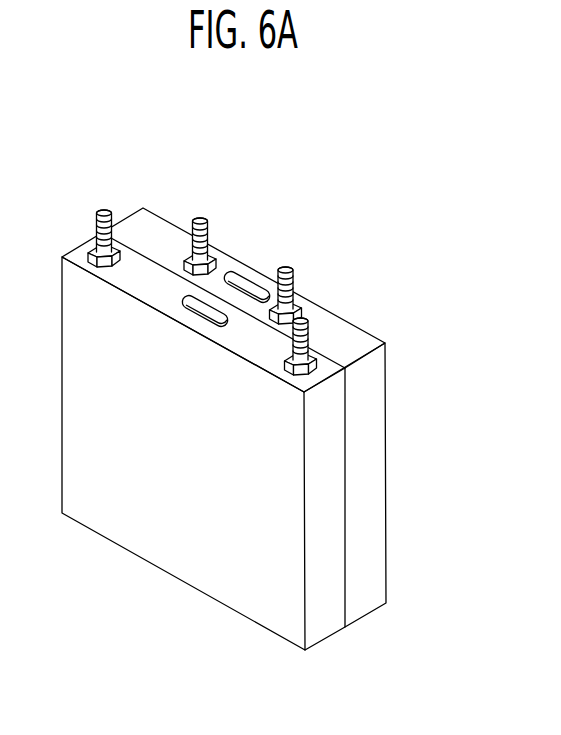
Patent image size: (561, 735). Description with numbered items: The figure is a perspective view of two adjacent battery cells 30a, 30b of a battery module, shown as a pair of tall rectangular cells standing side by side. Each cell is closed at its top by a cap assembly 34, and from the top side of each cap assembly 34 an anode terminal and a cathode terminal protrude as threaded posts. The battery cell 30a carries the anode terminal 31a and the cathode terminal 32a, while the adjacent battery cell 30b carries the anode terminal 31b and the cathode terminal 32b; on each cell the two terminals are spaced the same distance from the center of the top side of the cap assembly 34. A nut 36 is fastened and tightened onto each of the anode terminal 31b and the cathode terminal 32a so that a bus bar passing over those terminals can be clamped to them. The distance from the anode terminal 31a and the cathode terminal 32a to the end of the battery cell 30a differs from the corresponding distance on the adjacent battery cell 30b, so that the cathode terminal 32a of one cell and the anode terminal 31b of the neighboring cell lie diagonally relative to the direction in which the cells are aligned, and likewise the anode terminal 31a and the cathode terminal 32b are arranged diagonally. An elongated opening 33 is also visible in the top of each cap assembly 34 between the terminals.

The battery cell 30a is at (333, 574).
The adjacent battery cell 30b is at (375, 550).
The anode terminal 31a is at (311, 319).
The anode terminal 31b is at (200, 216).
The cathode terminal 32a is at (102, 207).
The cathode terminal 32b is at (286, 266).
The vent 33 is at (240, 282).
The cap assembly 34 is at (147, 227).
The nut 36 is at (295, 299).